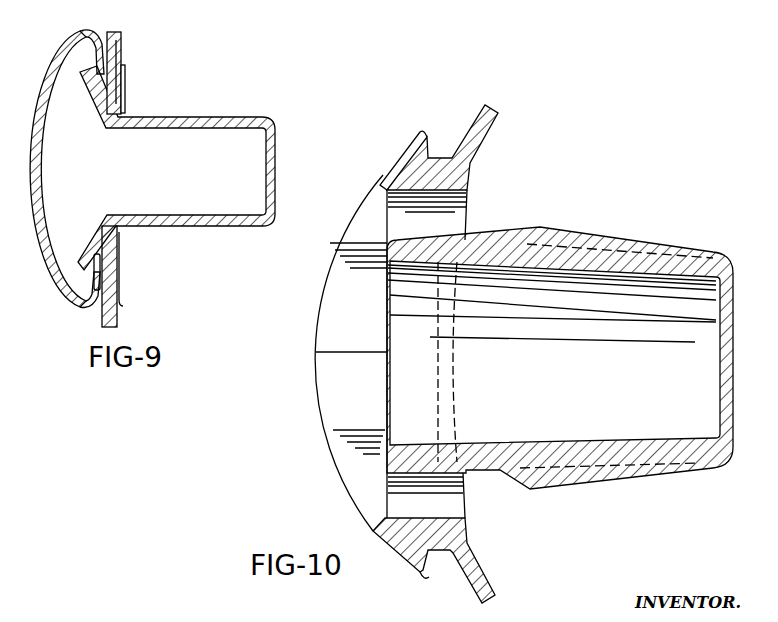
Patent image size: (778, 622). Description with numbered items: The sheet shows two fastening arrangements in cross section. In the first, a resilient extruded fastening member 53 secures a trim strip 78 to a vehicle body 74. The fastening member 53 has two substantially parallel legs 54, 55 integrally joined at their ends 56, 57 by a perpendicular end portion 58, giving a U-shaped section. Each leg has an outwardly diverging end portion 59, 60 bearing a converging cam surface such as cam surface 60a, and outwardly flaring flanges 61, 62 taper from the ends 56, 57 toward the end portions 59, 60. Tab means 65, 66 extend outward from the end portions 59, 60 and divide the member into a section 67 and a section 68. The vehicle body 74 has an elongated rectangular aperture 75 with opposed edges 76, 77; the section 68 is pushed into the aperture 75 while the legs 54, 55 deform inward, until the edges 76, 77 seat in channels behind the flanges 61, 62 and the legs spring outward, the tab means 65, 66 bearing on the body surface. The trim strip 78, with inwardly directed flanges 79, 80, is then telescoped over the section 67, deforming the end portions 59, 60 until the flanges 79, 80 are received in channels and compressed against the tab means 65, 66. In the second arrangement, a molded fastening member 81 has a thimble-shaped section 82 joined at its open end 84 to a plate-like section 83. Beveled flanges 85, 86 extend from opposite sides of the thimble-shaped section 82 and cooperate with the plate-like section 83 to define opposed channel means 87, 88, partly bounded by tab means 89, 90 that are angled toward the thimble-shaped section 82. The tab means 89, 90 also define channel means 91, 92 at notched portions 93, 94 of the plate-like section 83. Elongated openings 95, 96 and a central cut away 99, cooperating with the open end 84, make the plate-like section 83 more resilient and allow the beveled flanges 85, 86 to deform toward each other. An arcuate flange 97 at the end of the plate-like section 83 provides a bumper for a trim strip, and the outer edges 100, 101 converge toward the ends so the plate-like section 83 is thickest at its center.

In FIG. 9, the fastening member 53 is at (212, 108).
In FIG. 9, the leg 54 is at (193, 116).
In FIG. 9, the leg 55 is at (194, 227).
In FIG. 9, the end 56 is at (270, 117).
In FIG. 9, the end 57 is at (246, 227).
In FIG. 9, the end portion 58 is at (276, 166).
In FIG. 9, the end portion 59 is at (88, 58).
In FIG. 9, the end portion 60 is at (98, 226).
In FIG. 9, the cam surface 60a is at (94, 266).
In FIG. 9, the flange 61 is at (140, 112).
In FIG. 9, the flange 62 is at (120, 230).
In FIG. 9, the tab means 65 is at (115, 40).
In FIG. 9, the tab means 66 is at (118, 290).
In FIG. 9, the section 67 is at (93, 123).
In FIG. 9, the section 68 is at (265, 100).
In FIG. 9, the vehicle body 74 is at (118, 63).
In FIG. 9, the aperture 75 is at (127, 113).
In FIG. 9, the edge 76 is at (124, 100).
In FIG. 9, the edge 77 is at (120, 236).
In FIG. 9, the trim strip 78 is at (42, 95).
In FIG. 9, the flange 79 is at (100, 50).
In FIG. 9, the flange 80 is at (88, 302).
In FIG. 10, the fastening member 81 is at (598, 162).
In FIG. 10, the thimble-shaped section 82 is at (612, 246).
In FIG. 10, the plate-like section 83 is at (472, 180).
In FIG. 10, the open end 84 is at (455, 240).
In FIG. 10, the beveled flange 85 is at (555, 233).
In FIG. 10, the beveled flange 86 is at (556, 488).
In FIG. 10, the channel means 87 is at (522, 229).
In FIG. 10, the channel means 88 is at (493, 482).
In FIG. 10, the tab means 89 is at (470, 135).
In FIG. 10, the tab means 90 is at (490, 580).
In FIG. 10, the channel means 91 is at (441, 154).
In FIG. 10, the channel means 92 is at (447, 563).
In FIG. 10, the notched portion 93 is at (428, 136).
In FIG. 10, the notched portion 94 is at (425, 566).
In FIG. 10, the elongated opening 95 is at (399, 214).
In FIG. 10, the elongated opening 96 is at (400, 503).
In FIG. 10, the arcuate flange 97 is at (318, 396).
In FIG. 10, the cut away 99 is at (395, 448).
In FIG. 10, the outer edge 100 is at (423, 131).
In FIG. 10, the outer edge 101 is at (420, 573).